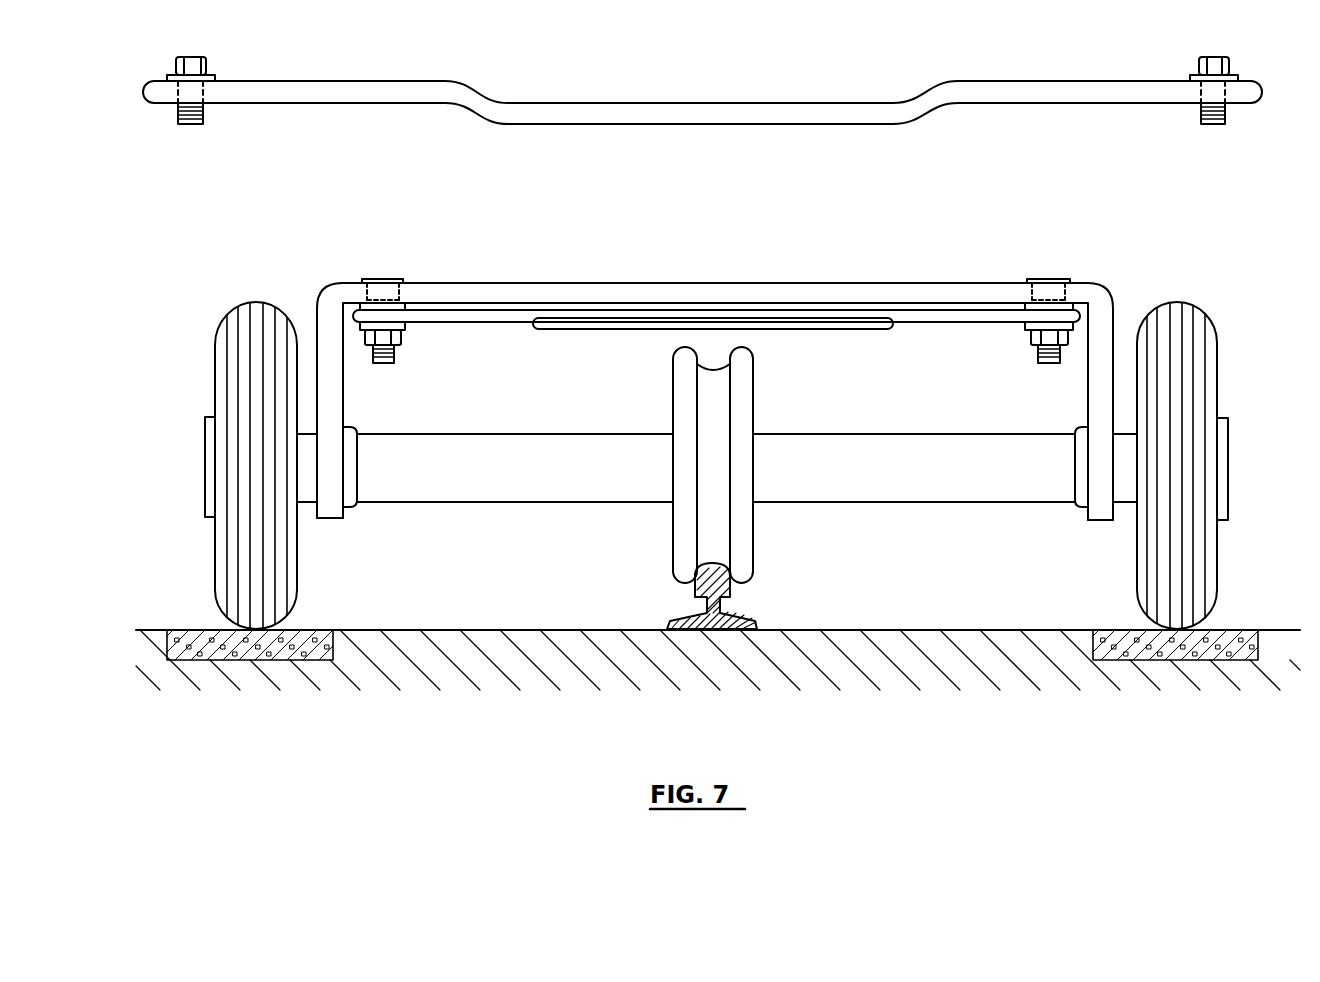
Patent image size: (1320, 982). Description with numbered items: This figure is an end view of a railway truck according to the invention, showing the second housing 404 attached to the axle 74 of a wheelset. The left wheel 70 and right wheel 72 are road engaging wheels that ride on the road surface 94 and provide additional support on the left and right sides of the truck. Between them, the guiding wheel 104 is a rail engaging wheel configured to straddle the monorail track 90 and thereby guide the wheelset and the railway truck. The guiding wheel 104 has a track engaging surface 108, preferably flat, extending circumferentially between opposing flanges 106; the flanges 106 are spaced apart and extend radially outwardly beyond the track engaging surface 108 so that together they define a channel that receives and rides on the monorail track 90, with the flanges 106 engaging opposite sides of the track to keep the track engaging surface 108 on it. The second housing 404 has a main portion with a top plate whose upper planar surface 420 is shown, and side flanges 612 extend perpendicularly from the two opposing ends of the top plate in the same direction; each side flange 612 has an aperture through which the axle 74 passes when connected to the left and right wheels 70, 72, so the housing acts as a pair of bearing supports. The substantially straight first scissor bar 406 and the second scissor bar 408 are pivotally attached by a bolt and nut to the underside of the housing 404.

The left wheel 70 is at (213, 345).
The right wheel 72 is at (1187, 303).
The axle 74 is at (980, 474).
The monorail track 90 is at (720, 602).
The road surface 94 is at (960, 640).
The guiding wheel 104 is at (727, 482).
The flanges 106 is at (673, 540).
The track engaging surface 108 is at (710, 552).
The second housing 404 is at (915, 287).
The first scissor bar 406 is at (490, 325).
The second scissor bar 408 is at (952, 325).
The upper planar surface 420 is at (715, 370).
The side flanges 612 is at (337, 402).